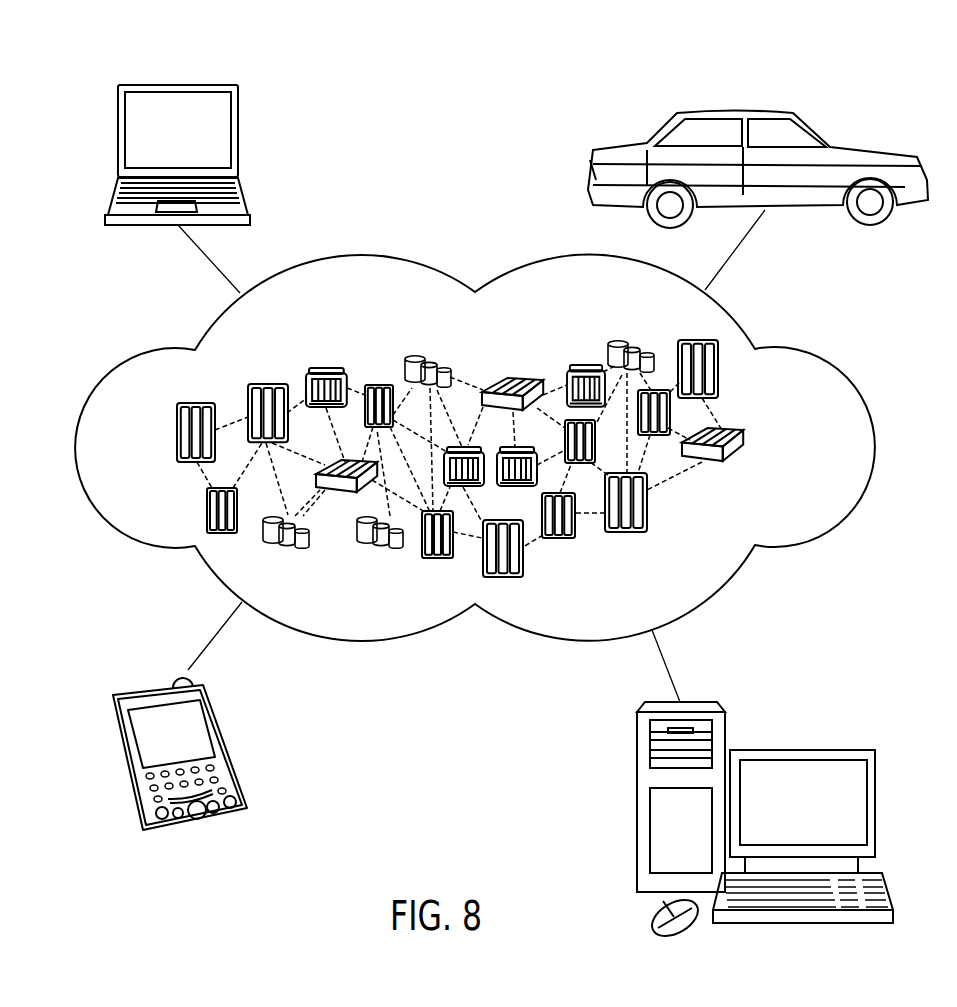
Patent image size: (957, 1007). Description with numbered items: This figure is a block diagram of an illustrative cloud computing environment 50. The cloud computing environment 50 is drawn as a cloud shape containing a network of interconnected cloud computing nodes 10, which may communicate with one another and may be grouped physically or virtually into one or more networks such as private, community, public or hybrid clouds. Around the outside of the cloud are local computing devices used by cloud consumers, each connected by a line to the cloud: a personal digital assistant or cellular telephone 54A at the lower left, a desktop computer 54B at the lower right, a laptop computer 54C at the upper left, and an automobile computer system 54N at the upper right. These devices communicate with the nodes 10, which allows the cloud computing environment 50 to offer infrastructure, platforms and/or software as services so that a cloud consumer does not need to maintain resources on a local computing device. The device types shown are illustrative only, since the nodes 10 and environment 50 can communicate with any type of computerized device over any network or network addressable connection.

The cloud computing node 10 is at (762, 450).
The cloud computing environment 50 is at (817, 353).
The personal digital assistant or cellular telephone 54A is at (157, 683).
The desktop computer 54B is at (802, 750).
The laptop computer 54C is at (177, 83).
The automobile computer system 54N is at (737, 110).